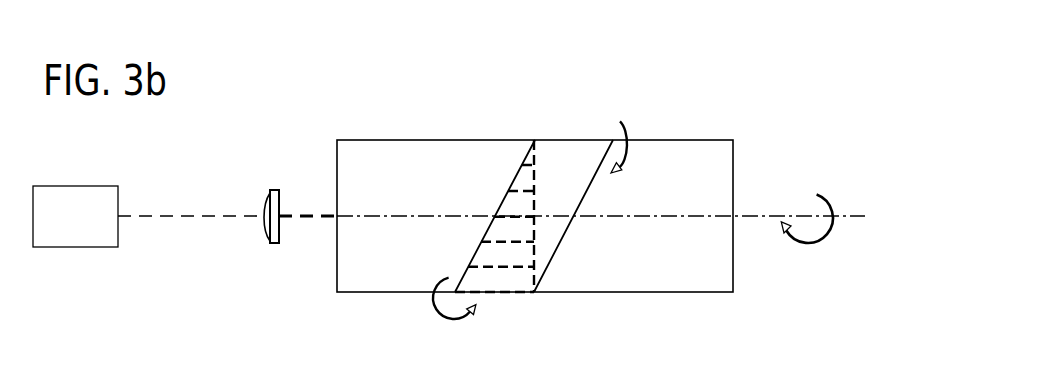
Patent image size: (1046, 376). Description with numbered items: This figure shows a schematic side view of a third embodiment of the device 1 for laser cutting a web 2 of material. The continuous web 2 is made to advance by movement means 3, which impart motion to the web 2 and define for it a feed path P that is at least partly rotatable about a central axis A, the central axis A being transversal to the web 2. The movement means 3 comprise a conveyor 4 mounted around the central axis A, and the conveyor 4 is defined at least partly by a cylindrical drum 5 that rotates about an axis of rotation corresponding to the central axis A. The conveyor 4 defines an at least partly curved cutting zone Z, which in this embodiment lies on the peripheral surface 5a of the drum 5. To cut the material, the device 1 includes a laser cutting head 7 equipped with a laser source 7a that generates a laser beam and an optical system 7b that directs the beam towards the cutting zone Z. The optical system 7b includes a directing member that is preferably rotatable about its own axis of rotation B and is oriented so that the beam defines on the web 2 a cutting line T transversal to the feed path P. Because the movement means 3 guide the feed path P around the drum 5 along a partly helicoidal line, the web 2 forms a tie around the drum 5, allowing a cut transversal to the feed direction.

The device for laser cutting a web of material 1 is at (744, 67).
The web of material 2 is at (590, 150).
The movement means 3 is at (333, 268).
The conveyor 4 is at (737, 163).
The drum 5 is at (668, 138).
The peripheral surface 5a is at (397, 155).
The laser cutting head 7 is at (181, 218).
The laser source 7a is at (95, 207).
The optical system 7b is at (264, 207).
The cutting zone Z is at (534, 168).
The feed path P is at (552, 185).
The cutting line T is at (507, 270).
The central axis A is at (808, 213).
The axis of rotation B is at (847, 213).